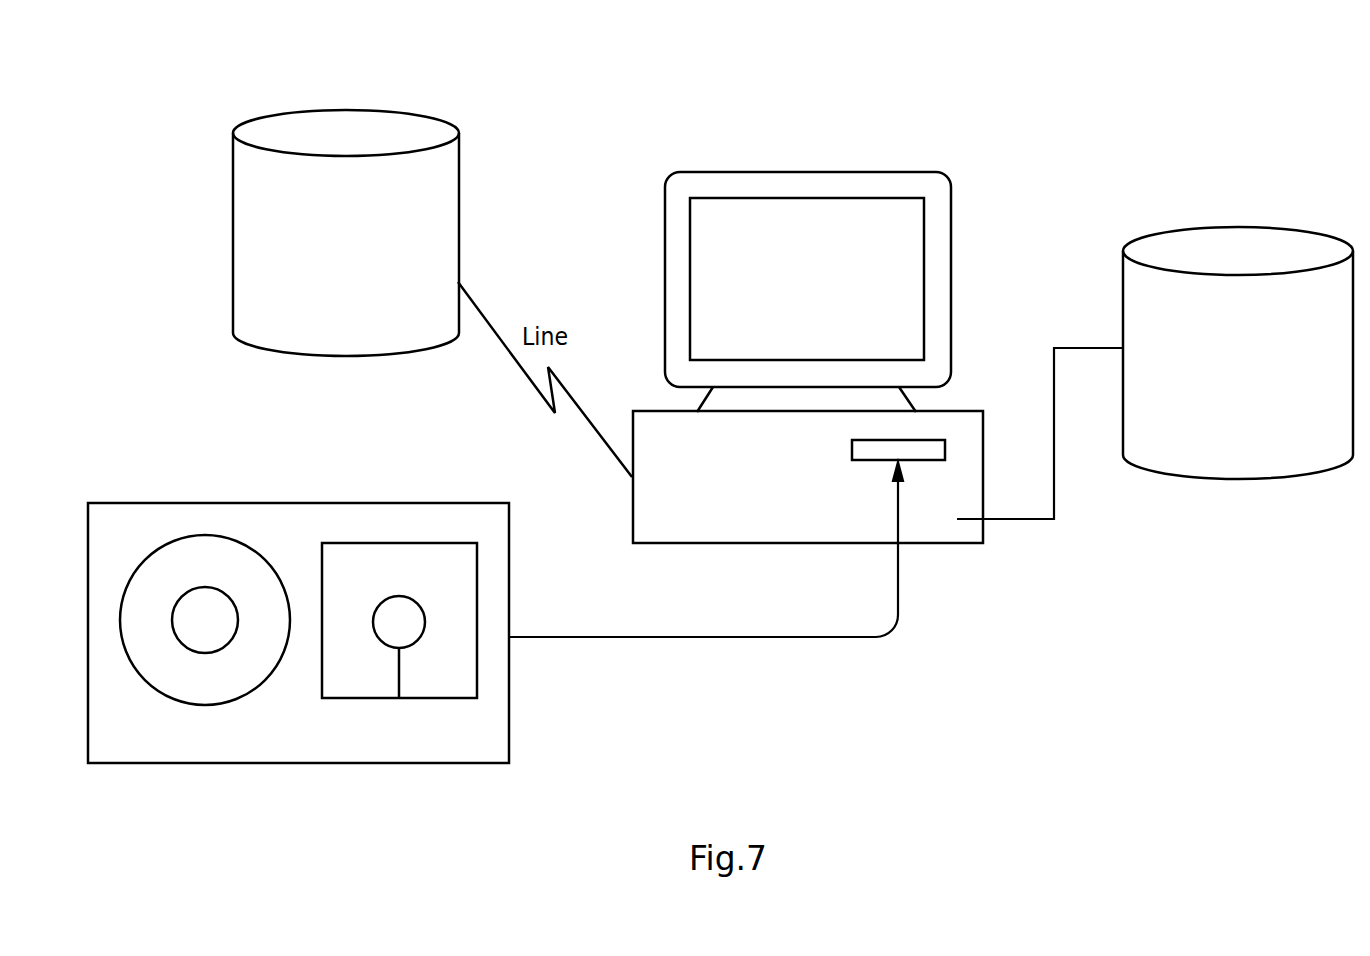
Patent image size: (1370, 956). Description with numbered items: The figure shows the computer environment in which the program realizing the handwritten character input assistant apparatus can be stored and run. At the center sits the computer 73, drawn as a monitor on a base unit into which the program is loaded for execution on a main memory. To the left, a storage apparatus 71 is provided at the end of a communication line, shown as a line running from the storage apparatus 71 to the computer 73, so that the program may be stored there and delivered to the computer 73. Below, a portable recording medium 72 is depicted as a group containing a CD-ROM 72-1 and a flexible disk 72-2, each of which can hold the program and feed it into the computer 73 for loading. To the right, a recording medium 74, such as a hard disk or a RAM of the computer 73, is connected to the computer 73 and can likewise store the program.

The storage apparatus 71 is at (407, 110).
The portable recording medium 72 is at (128, 503).
The CD-ROM 72-1 is at (237, 543).
The flexible disk 72-2 is at (398, 543).
The computer 73 is at (887, 172).
The recording medium 74 is at (1298, 227).